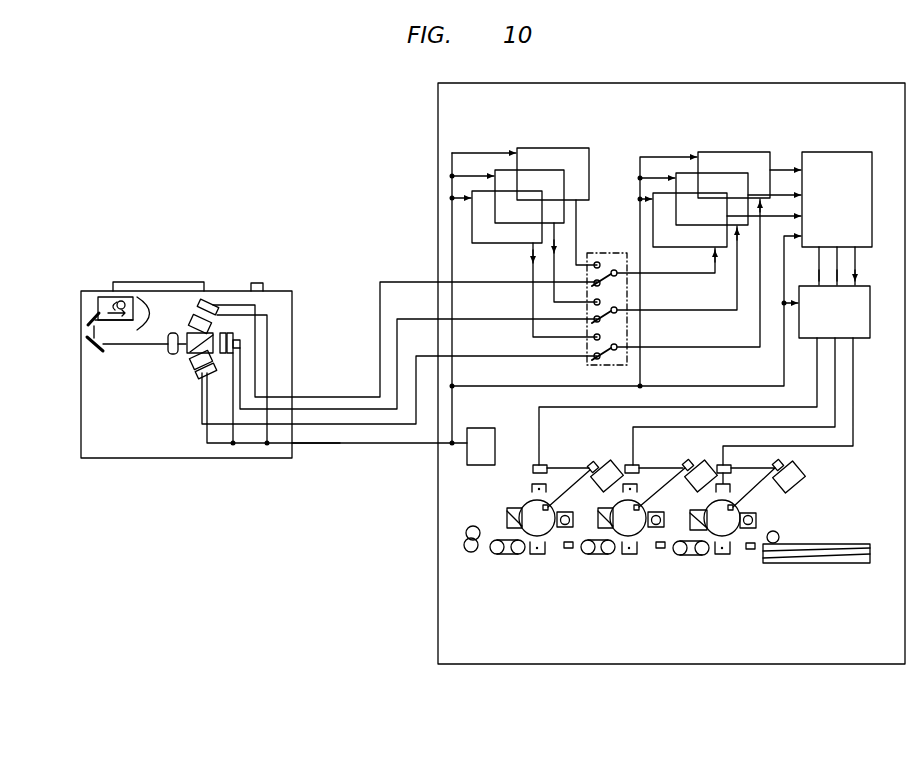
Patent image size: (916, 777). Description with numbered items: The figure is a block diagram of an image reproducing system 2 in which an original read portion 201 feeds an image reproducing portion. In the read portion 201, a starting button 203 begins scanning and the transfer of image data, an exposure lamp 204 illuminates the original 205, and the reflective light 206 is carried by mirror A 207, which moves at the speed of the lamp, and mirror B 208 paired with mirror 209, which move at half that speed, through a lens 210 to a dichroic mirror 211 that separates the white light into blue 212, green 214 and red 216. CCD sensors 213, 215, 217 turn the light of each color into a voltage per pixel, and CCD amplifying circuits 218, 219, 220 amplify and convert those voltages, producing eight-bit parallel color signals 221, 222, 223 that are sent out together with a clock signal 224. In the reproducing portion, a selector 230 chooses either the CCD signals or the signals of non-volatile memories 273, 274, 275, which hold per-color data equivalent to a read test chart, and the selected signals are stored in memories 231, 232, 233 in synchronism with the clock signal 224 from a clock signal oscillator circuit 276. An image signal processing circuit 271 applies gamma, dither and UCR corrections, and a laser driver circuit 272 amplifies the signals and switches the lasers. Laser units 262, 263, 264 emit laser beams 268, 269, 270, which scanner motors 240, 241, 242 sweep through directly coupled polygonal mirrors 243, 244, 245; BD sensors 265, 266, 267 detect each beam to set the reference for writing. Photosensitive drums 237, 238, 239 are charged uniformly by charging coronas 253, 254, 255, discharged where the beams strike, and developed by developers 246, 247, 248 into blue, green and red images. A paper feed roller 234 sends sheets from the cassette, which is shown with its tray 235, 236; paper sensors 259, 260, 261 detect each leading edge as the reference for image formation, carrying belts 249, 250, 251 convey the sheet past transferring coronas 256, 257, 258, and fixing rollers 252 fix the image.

The image forming system 2 is at (605, 668).
The read portion 201 is at (142, 459).
The starting button 203 is at (255, 283).
The exposure lamp 204 is at (100, 298).
The original 205 is at (172, 282).
The reflective light 206 is at (122, 299).
The mirror A 207 is at (142, 300).
The mirror B 208 is at (88, 319).
The mirror 209 is at (88, 344).
The lens 210 is at (167, 347).
The dichroic mirror 211 is at (188, 352).
The blue light 212 is at (194, 323).
The CCD sensor 213 is at (258, 318).
The green light 214 is at (215, 354).
The CCD sensor 215 is at (270, 335).
The red light 216 is at (233, 405).
The CCD sensor 217 is at (197, 363).
The CCD amplifying circuit 218 is at (211, 300).
The CCD amplifying circuit 219 is at (243, 348).
The CCD amplifying circuit 220 is at (203, 377).
The 8-bit parallel color signal 221 is at (245, 398).
The 8-bit parallel color signal 222 is at (262, 386).
The 8-bit parallel color signal 223 is at (205, 400).
The clock signal 224 is at (322, 445).
The selector 230 is at (586, 365).
The memory 231 is at (675, 247).
The memory 232 is at (686, 176).
The memory 233 is at (728, 155).
The paper feed roller 234 is at (779, 536).
The tray 235 is at (871, 564).
The tray 236 is at (834, 545).
The photosensitive drum 237 is at (738, 532).
The photosensitive drum 238 is at (645, 537).
The photosensitive drum 239 is at (552, 536).
The scanner motor 240 is at (798, 481).
The scanner motor 241 is at (702, 483).
The scanner motor 242 is at (586, 471).
The polygonal mirror 243 is at (786, 465).
The polygonal mirror 244 is at (690, 461).
The polygonal mirror 245 is at (595, 462).
The developer 246 is at (750, 514).
The developer 247 is at (661, 550).
The developer 248 is at (583, 553).
The carrying belt 249 is at (719, 556).
The carrying belt 250 is at (596, 555).
The carrying belt 251 is at (500, 555).
The fixing rollers 252 is at (466, 546).
The charging corona 253 is at (706, 468).
The charging corona 254 is at (622, 490).
The charging corona 255 is at (531, 488).
The transferring corona 256 is at (722, 537).
The transferring corona 257 is at (630, 556).
The transferring corona 258 is at (536, 556).
The paper sensor 259 is at (751, 550).
The paper sensor 260 is at (686, 556).
The paper sensor 261 is at (568, 550).
The laser unit 262 is at (723, 462).
The laser unit 263 is at (627, 466).
The laser unit 264 is at (536, 463).
The BD sensor 265 is at (747, 530).
The BD sensor 266 is at (652, 536).
The BD sensor 267 is at (560, 530).
The laser beam 268 is at (748, 466).
The laser beam 269 is at (665, 468).
The laser beam 270 is at (568, 468).
The image signal processing circuit 271 is at (835, 160).
The laser driver circuit 272 is at (868, 302).
The non-volatile memory 273 is at (491, 243).
The non-volatile memory 274 is at (536, 170).
The non-volatile memory 275 is at (578, 148).
The clock signal oscillator circuit 276 is at (478, 428).